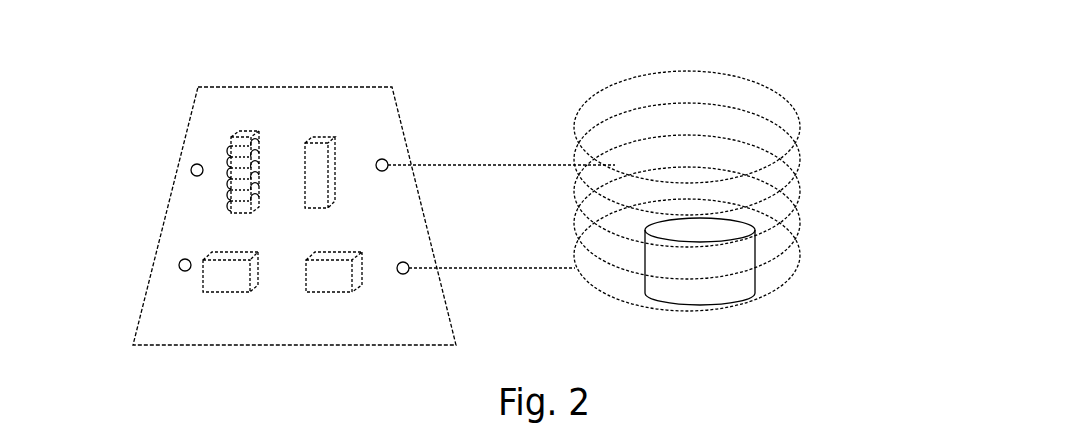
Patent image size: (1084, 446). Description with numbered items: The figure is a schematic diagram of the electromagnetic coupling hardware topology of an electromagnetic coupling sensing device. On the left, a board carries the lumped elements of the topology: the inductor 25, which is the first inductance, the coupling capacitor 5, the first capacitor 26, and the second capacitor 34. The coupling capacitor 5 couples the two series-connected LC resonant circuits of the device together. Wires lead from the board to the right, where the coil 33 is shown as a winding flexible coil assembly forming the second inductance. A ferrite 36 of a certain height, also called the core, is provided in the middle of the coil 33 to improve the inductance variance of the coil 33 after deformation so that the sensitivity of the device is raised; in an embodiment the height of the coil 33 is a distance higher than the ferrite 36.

The inductor 25 is at (228, 142).
The first capacitor 26 is at (205, 258).
The coupling capacitor 5 is at (338, 155).
The second capacitor 34 is at (362, 253).
The coil 33 is at (795, 120).
The ferrite 36 is at (808, 252).